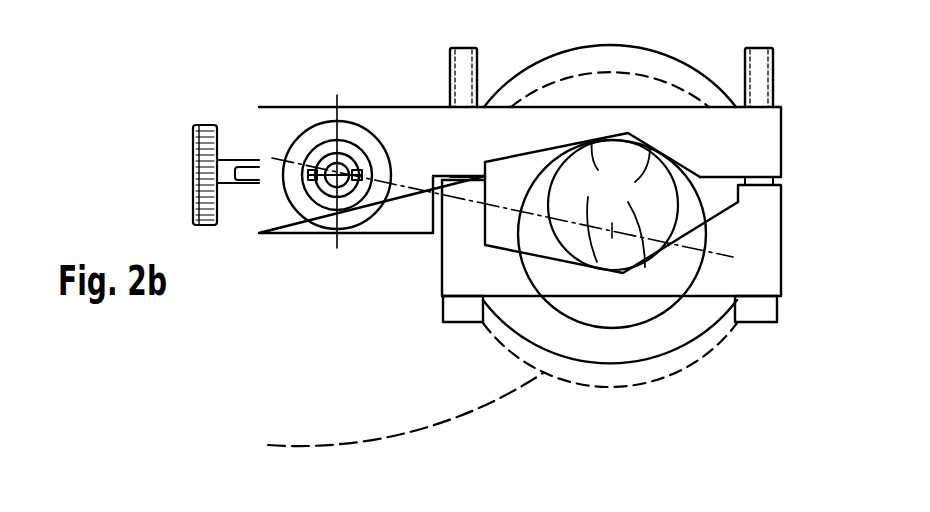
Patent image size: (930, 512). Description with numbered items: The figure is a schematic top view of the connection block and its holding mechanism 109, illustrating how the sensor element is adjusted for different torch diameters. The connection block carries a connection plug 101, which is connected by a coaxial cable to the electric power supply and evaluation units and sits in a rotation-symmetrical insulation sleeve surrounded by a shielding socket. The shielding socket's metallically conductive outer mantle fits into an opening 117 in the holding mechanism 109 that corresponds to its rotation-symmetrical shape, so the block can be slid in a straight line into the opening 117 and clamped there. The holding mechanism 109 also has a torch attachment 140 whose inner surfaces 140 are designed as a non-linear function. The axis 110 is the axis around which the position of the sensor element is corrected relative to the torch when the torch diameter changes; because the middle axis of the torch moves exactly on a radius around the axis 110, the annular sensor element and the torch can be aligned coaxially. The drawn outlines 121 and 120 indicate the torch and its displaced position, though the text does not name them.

The holding mechanism 109 is at (267, 120).
The opening 117 is at (363, 126).
The connection plug 101 is at (345, 182).
The axis 110 is at (413, 435).
The torch attachment 140 is at (612, 234).
The lens holder ring 121 is at (693, 322).
The displaced lens holder position 120 is at (620, 388).